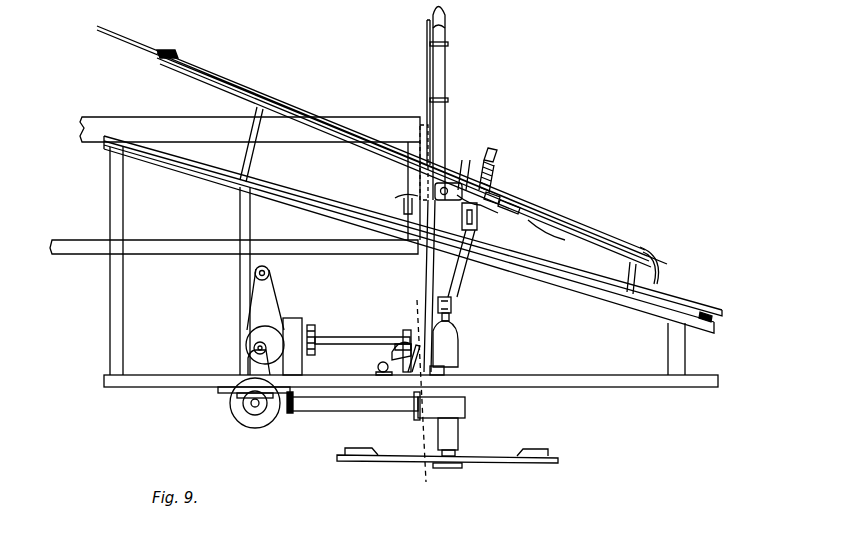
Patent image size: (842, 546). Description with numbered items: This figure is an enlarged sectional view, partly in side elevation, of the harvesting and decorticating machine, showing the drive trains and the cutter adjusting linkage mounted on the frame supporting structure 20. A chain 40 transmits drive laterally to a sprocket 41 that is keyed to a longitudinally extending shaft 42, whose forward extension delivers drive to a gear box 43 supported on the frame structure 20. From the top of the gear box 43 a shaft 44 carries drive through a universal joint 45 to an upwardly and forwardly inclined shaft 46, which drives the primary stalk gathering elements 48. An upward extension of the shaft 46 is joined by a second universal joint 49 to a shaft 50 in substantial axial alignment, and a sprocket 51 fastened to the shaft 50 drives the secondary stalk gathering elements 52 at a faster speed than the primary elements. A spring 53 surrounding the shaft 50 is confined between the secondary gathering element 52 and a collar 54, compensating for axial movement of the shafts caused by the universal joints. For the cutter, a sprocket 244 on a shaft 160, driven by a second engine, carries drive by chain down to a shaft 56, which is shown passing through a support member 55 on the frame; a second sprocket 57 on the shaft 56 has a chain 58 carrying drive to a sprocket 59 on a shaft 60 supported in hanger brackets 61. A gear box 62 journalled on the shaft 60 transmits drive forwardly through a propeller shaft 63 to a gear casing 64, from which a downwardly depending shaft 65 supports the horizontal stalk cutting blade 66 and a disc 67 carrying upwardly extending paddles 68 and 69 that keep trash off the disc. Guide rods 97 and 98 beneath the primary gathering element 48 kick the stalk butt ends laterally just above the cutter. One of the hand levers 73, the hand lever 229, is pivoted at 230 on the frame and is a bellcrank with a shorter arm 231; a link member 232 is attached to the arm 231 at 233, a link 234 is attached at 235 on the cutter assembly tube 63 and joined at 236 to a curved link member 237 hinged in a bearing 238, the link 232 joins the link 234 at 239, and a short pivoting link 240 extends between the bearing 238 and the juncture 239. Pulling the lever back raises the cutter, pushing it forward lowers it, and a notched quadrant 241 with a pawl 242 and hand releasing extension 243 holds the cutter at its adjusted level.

The frame supporting structure 20 is at (108, 318).
The chain 40 is at (309, 325).
The sprocket 41 is at (315, 326).
The longitudinally extending shaft 42 is at (360, 337).
The gear box 43 is at (455, 348).
The shaft 44 is at (452, 320).
The universal joint 45 is at (452, 305).
The inclined shaft 46 is at (460, 278).
The primary stalk gathering elements 48 is at (692, 300).
The second universal joint 49 is at (492, 204).
The shaft 50 is at (512, 200).
The sprocket 51 is at (502, 196).
The secondary stalk gathering elements 52 is at (643, 246).
The spring 53 is at (494, 172).
The collar 54 is at (498, 150).
The bearing block 55 is at (292, 318).
The shaft 56 is at (255, 340).
The second sprocket 57 is at (253, 349).
The chain 58 is at (249, 360).
The sprocket 59 is at (248, 415).
The shaft 60 is at (256, 410).
The hanger brackets 61 is at (248, 400).
The gear box 62 is at (268, 413).
The propeller shaft 63 is at (320, 411).
The gear casing 64 is at (465, 403).
The downwardly depending shaft 65 is at (460, 452).
The stalk cutting blade 66 is at (455, 468).
The disc 67 is at (503, 463).
The paddle 68 is at (360, 461).
The paddle 69 is at (548, 452).
The hand engaging levers 73 is at (478, 78).
The guide rod 97 is at (572, 232).
The curved guide rod 98 is at (407, 205).
The shaft 160 is at (254, 272).
The hand lever 229 is at (450, 52).
The pivot 230 is at (360, 178).
The shorter arm 231 is at (410, 214).
The link member 232 is at (427, 270).
The pivot 233 is at (470, 195).
The link 234 is at (411, 407).
The pivot 235 is at (424, 478).
The pivot 236 is at (404, 336).
The curved link member 237 is at (392, 354).
The bearing 238 is at (377, 367).
The juncture 239 is at (444, 368).
The short pivoting link 240 is at (412, 356).
The notched quadrant 241 is at (460, 160).
The pawl 242 is at (420, 146).
The hand releasing extension 243 is at (426, 36).
The sprocket 244 is at (255, 286).